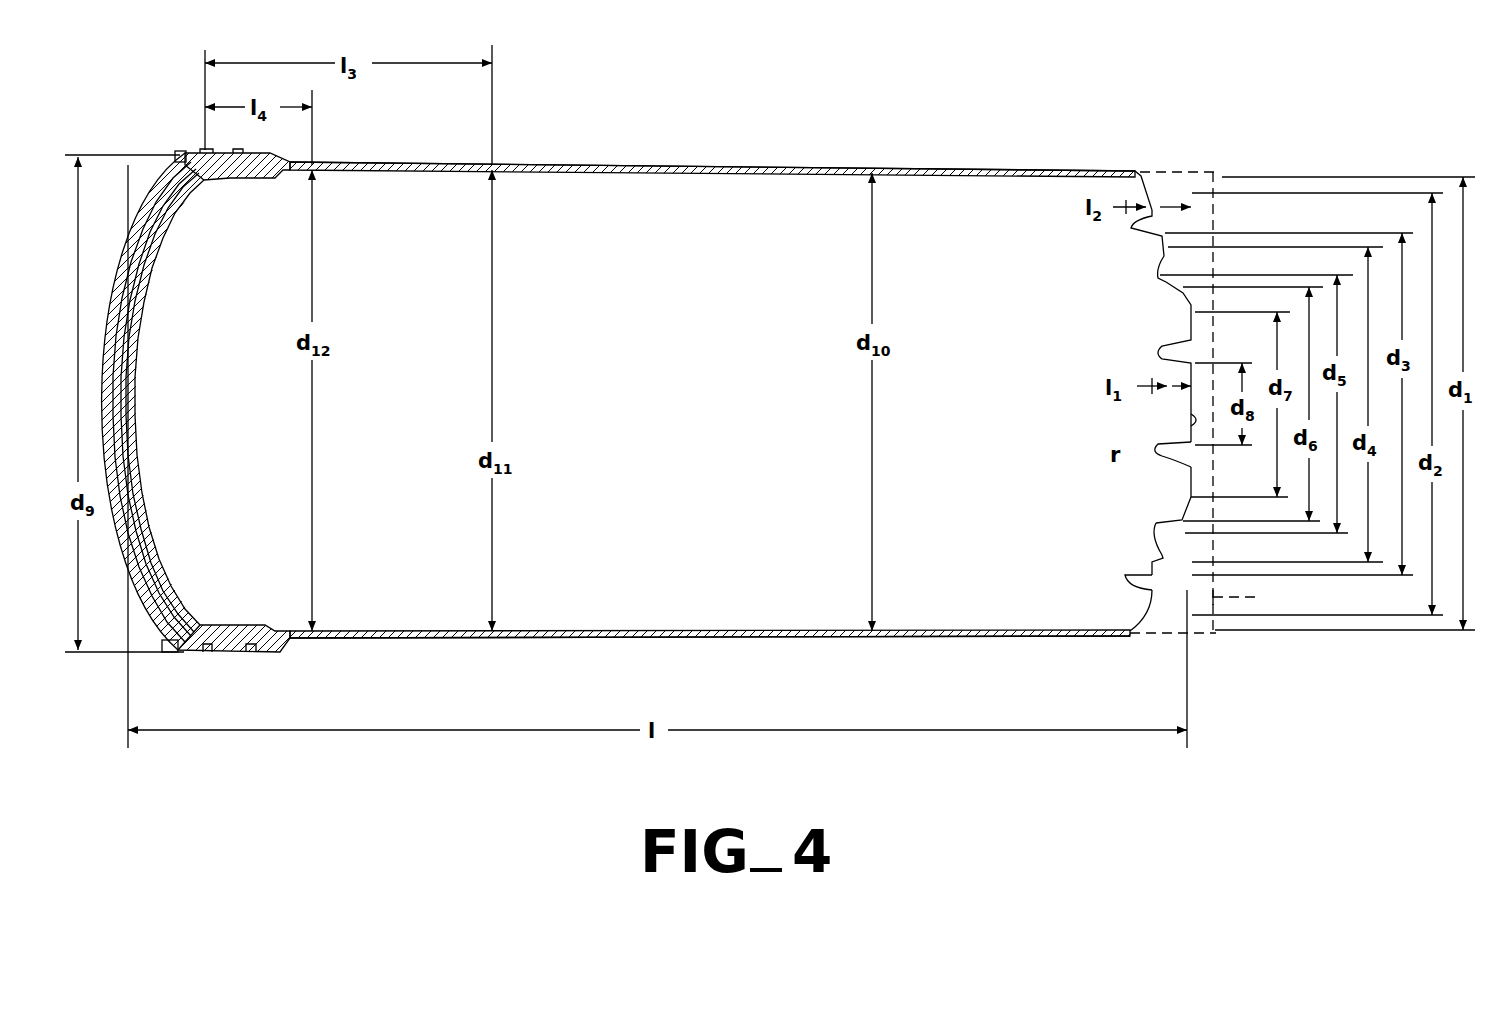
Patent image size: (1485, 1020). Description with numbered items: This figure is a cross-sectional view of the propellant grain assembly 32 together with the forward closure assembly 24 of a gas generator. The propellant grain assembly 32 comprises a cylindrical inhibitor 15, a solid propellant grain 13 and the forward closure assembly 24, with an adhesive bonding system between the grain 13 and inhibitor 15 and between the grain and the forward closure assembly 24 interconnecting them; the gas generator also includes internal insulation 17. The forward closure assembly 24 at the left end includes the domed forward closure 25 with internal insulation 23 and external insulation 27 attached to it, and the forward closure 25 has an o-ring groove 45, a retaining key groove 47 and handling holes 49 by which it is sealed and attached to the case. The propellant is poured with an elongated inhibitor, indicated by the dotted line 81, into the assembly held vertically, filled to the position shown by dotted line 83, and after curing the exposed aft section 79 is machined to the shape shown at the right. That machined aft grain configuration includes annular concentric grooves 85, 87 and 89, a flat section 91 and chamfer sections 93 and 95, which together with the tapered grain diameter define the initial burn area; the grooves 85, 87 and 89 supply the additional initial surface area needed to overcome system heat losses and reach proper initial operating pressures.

The propellant grain 13 is at (420, 192).
The inhibitor 15 is at (386, 166).
The internal insulation 17 is at (681, 371).
The internal insulation 23 is at (134, 462).
The forward closure assembly 24 is at (144, 401).
The forward closure 25 is at (118, 395).
The external insulation 27 is at (142, 204).
The propellant grain assembly 32 is at (735, 130).
The o-ring groove 45 is at (232, 160).
The retaining key groove 47 is at (210, 152).
The handling holes 49 is at (185, 152).
The exposed aft section 79 is at (1248, 157).
The dotted line 81 is at (1180, 160).
The dotted line 83 is at (1252, 599).
The annular concentric groove 85 is at (1178, 456).
The annular concentric groove 87 is at (1153, 540).
The annular concentric groove 89 is at (1133, 580).
The flat section 91 is at (1193, 420).
The chamfer section 93 is at (1195, 500).
The chamfer section 95 is at (1142, 634).